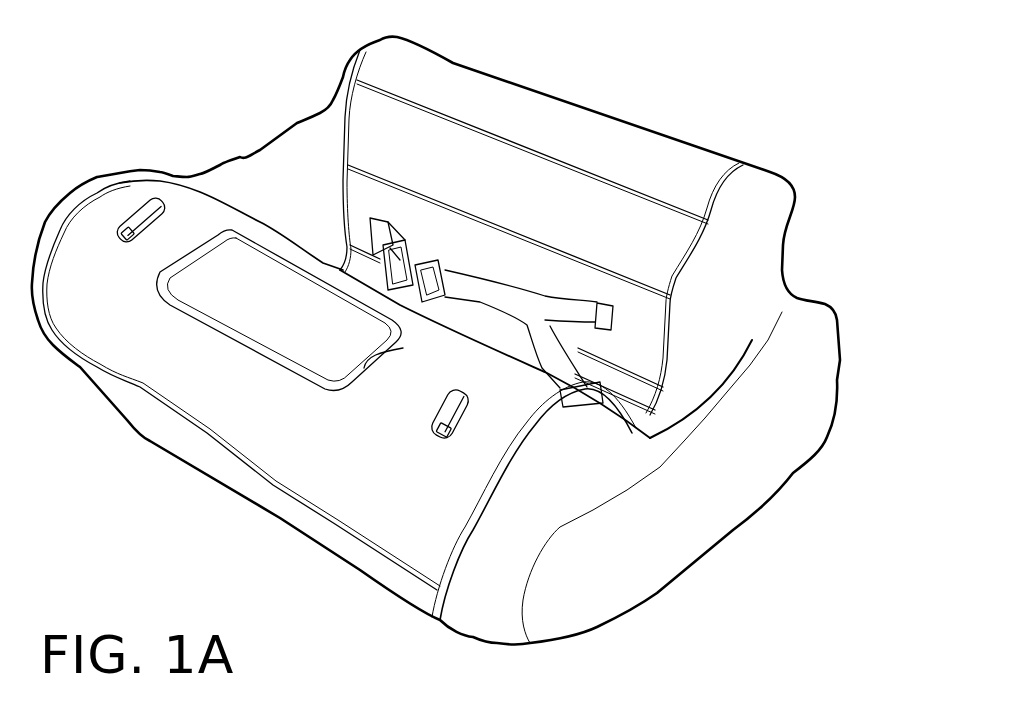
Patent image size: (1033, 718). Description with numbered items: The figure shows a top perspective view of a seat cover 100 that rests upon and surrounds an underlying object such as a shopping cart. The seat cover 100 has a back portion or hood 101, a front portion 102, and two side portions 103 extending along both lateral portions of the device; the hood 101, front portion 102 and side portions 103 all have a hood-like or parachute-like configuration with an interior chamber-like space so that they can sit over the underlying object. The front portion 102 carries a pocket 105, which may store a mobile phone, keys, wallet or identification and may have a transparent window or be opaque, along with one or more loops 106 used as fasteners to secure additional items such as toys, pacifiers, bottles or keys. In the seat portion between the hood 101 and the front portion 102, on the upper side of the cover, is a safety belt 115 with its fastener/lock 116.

The seat cover 100 is at (103, 119).
The hood 101 is at (757, 190).
The front portion 102 is at (492, 608).
The side portions 103 is at (773, 465).
The pocket 105 is at (237, 323).
The loop 106 is at (430, 443).
The safety belt 115 is at (470, 290).
The fastener/lock 116 is at (423, 263).